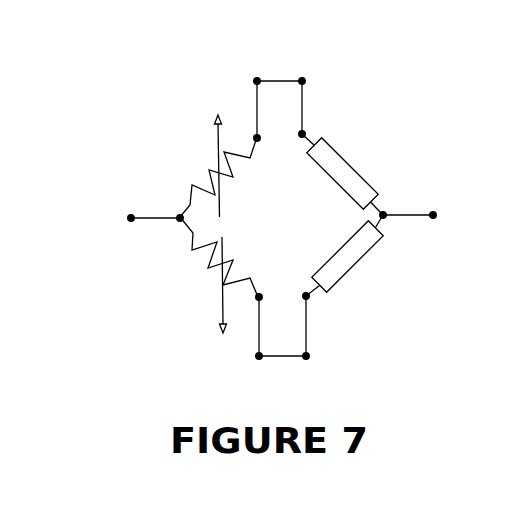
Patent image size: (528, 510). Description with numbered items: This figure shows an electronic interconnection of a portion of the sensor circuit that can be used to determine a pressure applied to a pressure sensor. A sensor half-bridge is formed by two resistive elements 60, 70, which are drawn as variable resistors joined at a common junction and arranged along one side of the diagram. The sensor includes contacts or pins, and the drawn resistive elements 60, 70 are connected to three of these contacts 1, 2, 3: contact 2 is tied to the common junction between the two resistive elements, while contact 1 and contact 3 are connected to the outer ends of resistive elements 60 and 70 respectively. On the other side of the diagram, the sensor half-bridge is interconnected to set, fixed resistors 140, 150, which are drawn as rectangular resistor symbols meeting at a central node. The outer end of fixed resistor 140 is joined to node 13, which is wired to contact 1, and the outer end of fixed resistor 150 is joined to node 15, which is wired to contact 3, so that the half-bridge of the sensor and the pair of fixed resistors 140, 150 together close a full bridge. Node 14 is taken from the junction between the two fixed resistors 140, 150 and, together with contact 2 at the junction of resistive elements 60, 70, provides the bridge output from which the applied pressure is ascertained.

The contact 1 is at (277, 96).
The contact 2 is at (146, 219).
The contact 3 is at (260, 343).
The first bridge node 13 is at (309, 94).
The output terminal 14 is at (421, 217).
The second bridge node 15 is at (293, 341).
The resistive element 60 is at (197, 172).
The resistive element 70 is at (193, 269).
The fixed resistor 140 is at (352, 166).
The fixed resistor 150 is at (352, 259).